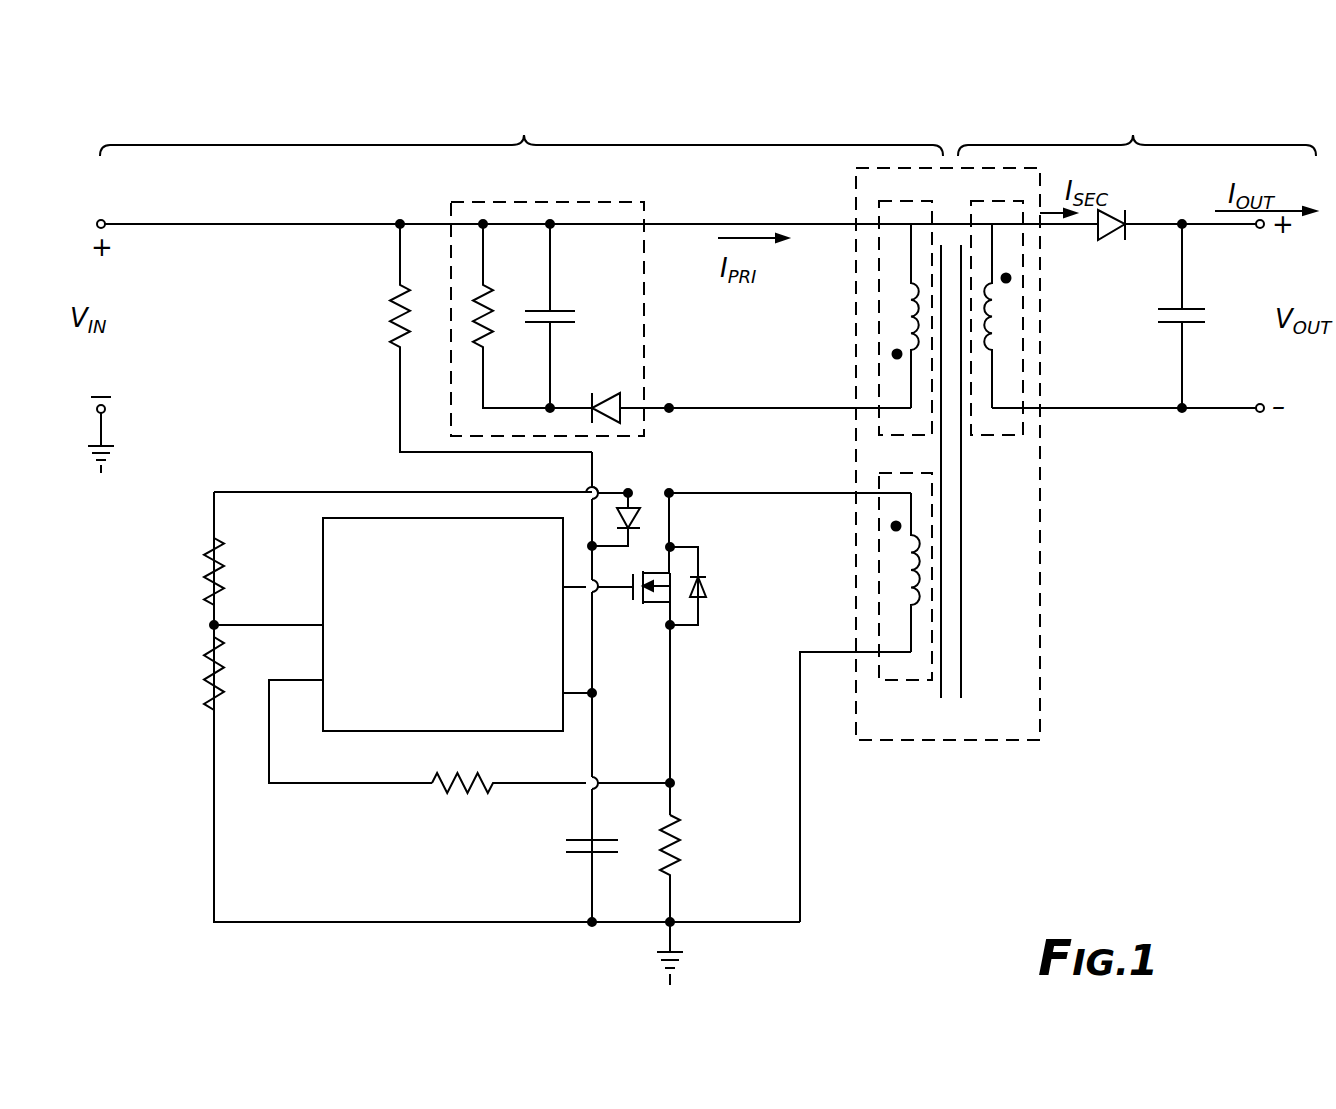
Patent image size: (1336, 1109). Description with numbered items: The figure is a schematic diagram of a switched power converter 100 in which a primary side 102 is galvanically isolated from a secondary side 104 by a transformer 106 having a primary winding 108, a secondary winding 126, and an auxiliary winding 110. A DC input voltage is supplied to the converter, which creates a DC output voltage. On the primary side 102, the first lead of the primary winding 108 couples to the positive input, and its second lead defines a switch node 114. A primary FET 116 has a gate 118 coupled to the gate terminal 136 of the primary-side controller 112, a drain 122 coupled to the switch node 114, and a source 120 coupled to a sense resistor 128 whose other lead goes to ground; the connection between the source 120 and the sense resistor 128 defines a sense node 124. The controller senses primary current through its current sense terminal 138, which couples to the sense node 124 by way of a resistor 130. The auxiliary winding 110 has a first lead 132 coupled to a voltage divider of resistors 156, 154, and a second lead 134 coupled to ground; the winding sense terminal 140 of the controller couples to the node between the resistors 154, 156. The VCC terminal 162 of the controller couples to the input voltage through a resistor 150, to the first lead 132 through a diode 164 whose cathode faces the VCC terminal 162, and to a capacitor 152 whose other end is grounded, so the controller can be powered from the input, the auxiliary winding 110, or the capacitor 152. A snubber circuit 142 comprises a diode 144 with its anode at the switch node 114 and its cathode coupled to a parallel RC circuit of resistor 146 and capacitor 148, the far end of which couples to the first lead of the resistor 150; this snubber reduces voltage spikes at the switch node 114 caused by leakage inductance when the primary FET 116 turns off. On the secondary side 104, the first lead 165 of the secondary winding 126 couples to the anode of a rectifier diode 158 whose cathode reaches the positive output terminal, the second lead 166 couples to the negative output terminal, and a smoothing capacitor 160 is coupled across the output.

The switched power converter 100 is at (1243, 126).
The primary side 102 is at (524, 135).
The secondary side 104 is at (1133, 135).
The transformer 106 is at (1042, 418).
The primary winding 108 is at (879, 210).
The auxiliary winding 110 is at (900, 682).
The primary-side controller 112 is at (423, 612).
The switch node 114 is at (745, 408).
The primary FET 116 is at (650, 605).
The gate 118 is at (633, 601).
The source 120 is at (672, 627).
The drain 122 is at (672, 546).
The sense node 124 is at (672, 783).
The secondary winding 126 is at (991, 440).
The sense resistor 128 is at (677, 832).
The resistor 130 is at (440, 790).
The first lead 132 is at (910, 497).
The second lead 134 is at (911, 645).
The gate terminal 136 is at (563, 590).
The current sense terminal 138 is at (323, 680).
The winding sense terminal 140 is at (323, 622).
The snubber circuit 142 is at (451, 377).
The diode 144 is at (604, 394).
The resistor 146 is at (483, 290).
The capacitor 148 is at (560, 311).
The resistor 150 is at (398, 314).
The capacitor 152 is at (568, 853).
The resistor 154 is at (208, 690).
The resistor 156 is at (212, 551).
The diode 158 is at (1108, 243).
The smoothing capacitor 160 is at (1190, 309).
The VCC terminal 162 is at (563, 693).
The diode 164 is at (627, 507).
The first lead 165 is at (997, 222).
The second lead 166 is at (1010, 410).